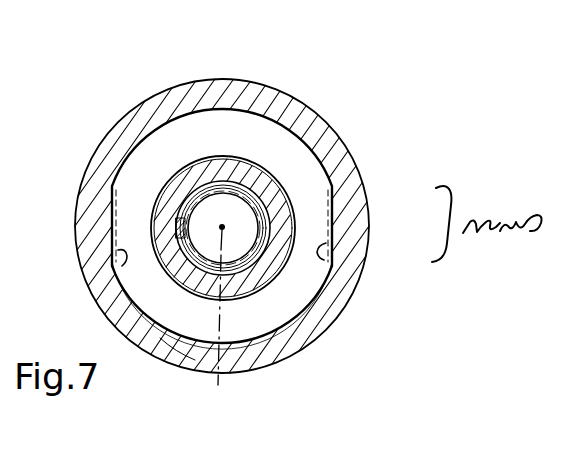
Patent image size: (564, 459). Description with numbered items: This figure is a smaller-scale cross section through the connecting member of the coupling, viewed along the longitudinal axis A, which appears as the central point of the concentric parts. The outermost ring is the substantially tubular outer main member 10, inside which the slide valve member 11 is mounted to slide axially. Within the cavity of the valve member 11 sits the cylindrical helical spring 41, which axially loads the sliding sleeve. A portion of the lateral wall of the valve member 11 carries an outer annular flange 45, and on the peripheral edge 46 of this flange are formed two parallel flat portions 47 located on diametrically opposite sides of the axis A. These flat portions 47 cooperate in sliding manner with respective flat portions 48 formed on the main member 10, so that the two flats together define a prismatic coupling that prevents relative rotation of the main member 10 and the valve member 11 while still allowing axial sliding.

The outer main member 10 is at (231, 77).
The slide valve member 11 is at (258, 146).
The cylindrical helical spring 41 is at (163, 197).
The outer annular flange 45 is at (185, 143).
The peripheral edge 46 is at (177, 344).
The flat portions 47 is at (119, 250).
The flat portions 48 is at (108, 211).
The longitudinal axis A is at (221, 321).